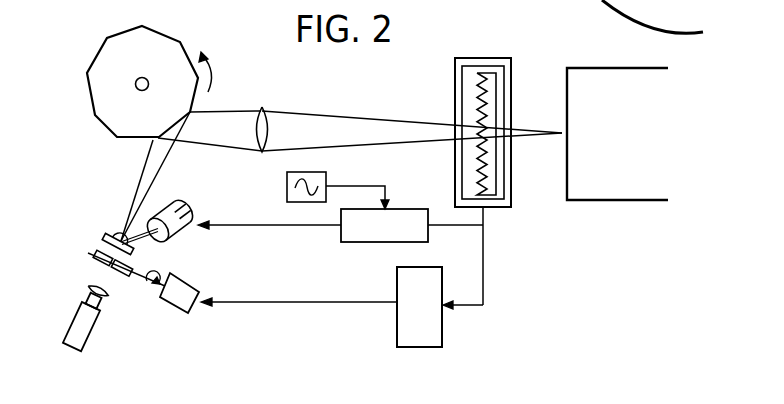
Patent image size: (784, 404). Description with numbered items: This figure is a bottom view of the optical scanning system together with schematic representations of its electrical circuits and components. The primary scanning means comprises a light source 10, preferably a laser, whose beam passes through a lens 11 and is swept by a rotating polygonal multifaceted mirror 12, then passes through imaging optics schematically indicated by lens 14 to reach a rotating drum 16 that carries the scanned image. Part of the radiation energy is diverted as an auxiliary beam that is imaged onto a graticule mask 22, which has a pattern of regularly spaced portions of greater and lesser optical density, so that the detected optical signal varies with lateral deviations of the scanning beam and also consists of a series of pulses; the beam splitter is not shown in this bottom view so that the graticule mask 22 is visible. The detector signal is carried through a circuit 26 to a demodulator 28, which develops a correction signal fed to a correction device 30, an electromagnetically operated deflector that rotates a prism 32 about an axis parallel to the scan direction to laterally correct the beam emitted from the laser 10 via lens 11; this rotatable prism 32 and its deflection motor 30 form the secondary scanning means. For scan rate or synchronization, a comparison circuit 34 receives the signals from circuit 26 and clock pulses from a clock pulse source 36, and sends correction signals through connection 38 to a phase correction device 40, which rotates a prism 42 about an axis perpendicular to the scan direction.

The light source 10 is at (88, 333).
The lens 11 is at (84, 291).
The rotating polygonal multifaceted mirror 12 is at (162, 39).
The imaging optics 14 is at (266, 121).
The rotating drum 16 is at (566, 88).
The graticule mask 22 is at (472, 112).
The circuit 26 is at (486, 256).
The demodulator 28 is at (398, 333).
The correction device 30 is at (177, 306).
The prism 32 is at (96, 255).
The comparison circuit 34 is at (377, 243).
The clock pulse source 36 is at (285, 184).
The connection 38 is at (237, 227).
The phase correction device 40 is at (180, 213).
The prism 42 is at (111, 239).